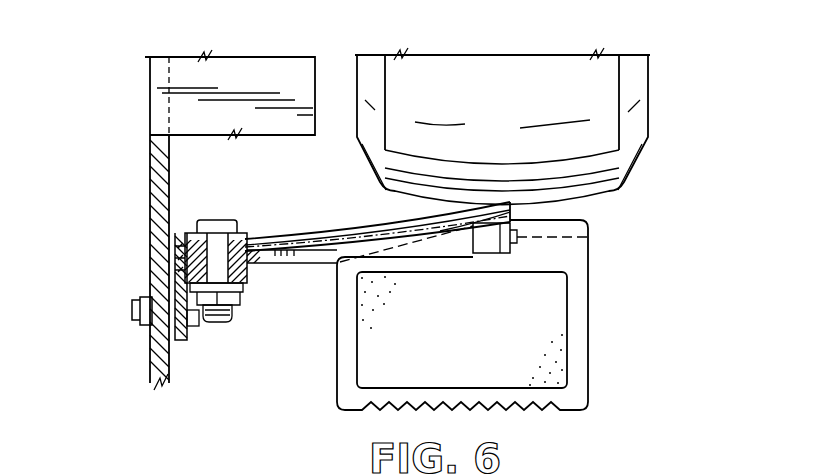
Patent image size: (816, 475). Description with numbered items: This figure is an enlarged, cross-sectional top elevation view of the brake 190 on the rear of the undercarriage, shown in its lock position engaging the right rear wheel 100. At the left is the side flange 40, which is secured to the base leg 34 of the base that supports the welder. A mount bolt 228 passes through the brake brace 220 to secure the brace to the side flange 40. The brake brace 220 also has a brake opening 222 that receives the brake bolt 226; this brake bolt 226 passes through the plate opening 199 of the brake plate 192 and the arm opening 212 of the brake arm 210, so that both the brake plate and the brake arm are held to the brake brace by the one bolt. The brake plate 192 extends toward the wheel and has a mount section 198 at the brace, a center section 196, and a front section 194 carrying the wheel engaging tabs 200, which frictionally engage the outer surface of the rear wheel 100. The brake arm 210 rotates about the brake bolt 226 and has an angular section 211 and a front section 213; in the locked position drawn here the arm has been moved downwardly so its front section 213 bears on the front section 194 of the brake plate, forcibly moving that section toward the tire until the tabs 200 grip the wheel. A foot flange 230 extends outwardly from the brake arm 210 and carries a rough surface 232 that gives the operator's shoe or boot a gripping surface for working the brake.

The base leg 34 is at (263, 75).
The side flange 40 is at (145, 153).
The rear wheel 100 is at (607, 100).
The brake 190 is at (535, 341).
The brake plate 192 is at (448, 173).
The front section 194 is at (480, 230).
The center section 196 is at (298, 233).
The mount section 198 is at (178, 236).
The plate opening 199 is at (209, 246).
The wheel engaging tab 200 is at (487, 212).
The brake arm 210 is at (601, 287).
The angular section 211 is at (410, 243).
The arm opening 212 is at (185, 263).
The front section 213 is at (507, 213).
The brake brace 220 is at (193, 348).
The brake opening 222 is at (236, 290).
The brake bolt 226 is at (205, 218).
The mount bolt 228 is at (127, 326).
The foot flange 230 is at (575, 373).
The rough surface 232 is at (530, 407).